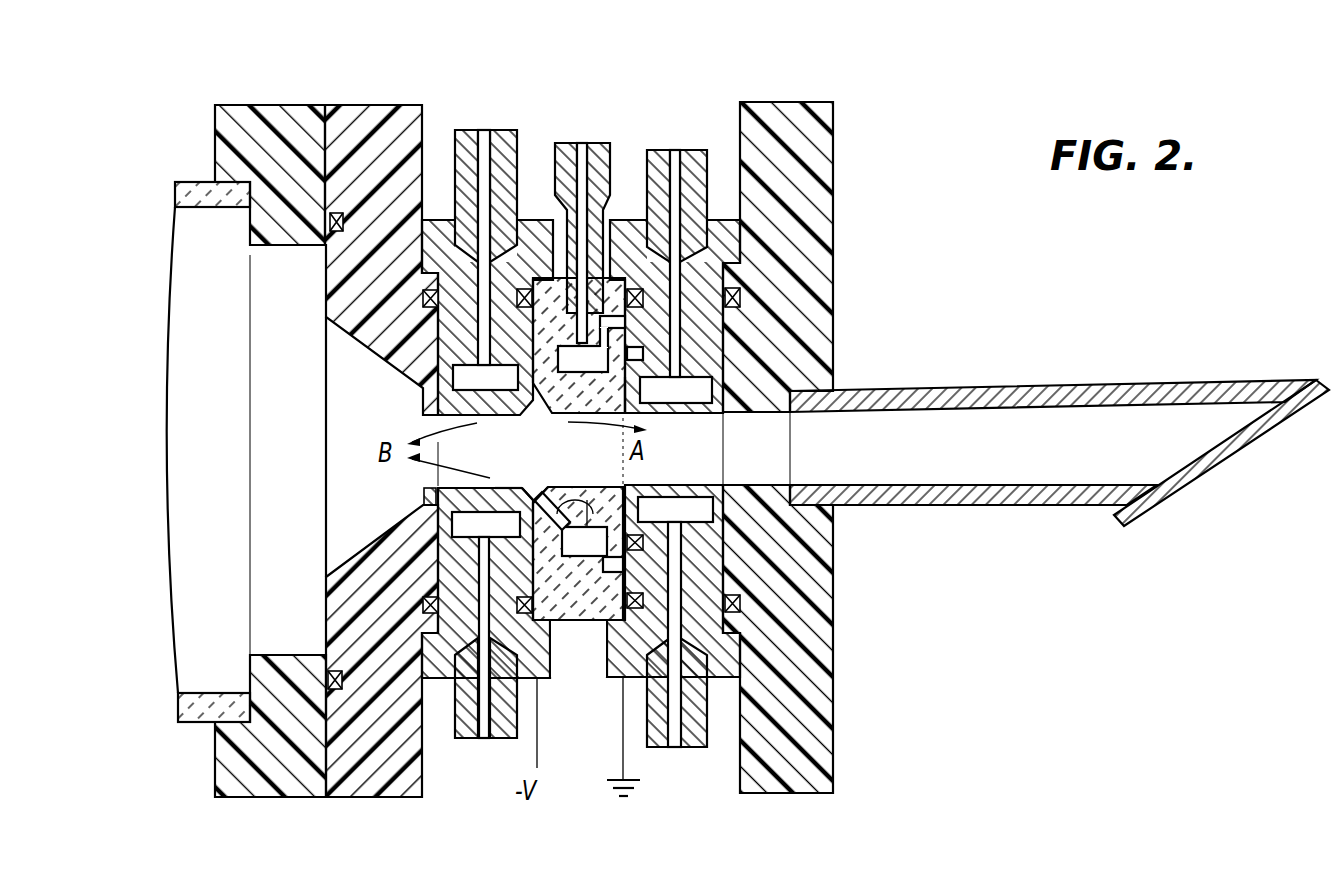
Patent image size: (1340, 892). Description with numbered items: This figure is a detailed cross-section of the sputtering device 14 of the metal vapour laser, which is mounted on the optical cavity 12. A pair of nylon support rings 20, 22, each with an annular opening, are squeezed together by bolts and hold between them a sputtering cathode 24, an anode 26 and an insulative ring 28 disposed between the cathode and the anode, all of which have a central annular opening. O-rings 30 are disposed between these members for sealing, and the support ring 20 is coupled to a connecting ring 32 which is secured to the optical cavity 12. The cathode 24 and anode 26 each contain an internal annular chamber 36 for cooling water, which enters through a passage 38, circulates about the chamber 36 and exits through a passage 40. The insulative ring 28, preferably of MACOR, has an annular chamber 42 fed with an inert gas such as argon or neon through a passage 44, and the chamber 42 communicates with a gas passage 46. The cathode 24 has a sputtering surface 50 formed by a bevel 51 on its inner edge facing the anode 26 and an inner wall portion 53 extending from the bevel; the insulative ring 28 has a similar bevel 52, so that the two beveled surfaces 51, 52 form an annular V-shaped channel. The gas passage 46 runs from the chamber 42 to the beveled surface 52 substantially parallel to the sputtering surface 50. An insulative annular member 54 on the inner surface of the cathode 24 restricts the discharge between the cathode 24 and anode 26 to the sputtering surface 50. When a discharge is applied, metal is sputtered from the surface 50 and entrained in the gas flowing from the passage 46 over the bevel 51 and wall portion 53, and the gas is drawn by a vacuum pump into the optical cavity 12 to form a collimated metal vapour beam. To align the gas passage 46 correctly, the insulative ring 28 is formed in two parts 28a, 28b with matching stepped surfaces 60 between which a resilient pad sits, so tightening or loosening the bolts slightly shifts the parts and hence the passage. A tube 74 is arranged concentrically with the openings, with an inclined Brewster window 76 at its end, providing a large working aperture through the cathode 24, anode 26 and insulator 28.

The optical cavity 12 is at (200, 193).
The sputtering device 14 is at (867, 128).
The support ring 20 is at (370, 133).
The support ring 22 is at (795, 127).
The sputtering cathode 24 is at (527, 225).
The anode 26 is at (722, 222).
The insulative ring 28 is at (566, 627).
The part of insulative ring 28a is at (640, 350).
The part of insulative ring 28b is at (622, 377).
The O-rings 30 is at (513, 303).
The connecting ring 32 is at (278, 142).
The internal annular chamber 36 is at (582, 386).
The passage 38 is at (485, 288).
The passage 40 is at (483, 577).
The annular chamber 42 is at (579, 345).
The passage 44 is at (615, 200).
The gas passage 46 is at (578, 553).
The sputtering surface 50 is at (508, 485).
The bevel 51 is at (525, 488).
The bevel 52 is at (577, 464).
The inner wall portion 53 is at (475, 490).
The insulative annular member 54 is at (424, 497).
The stepped surface 60 is at (625, 325).
The tube 74 is at (1024, 490).
The Brewster window 76 is at (1248, 445).